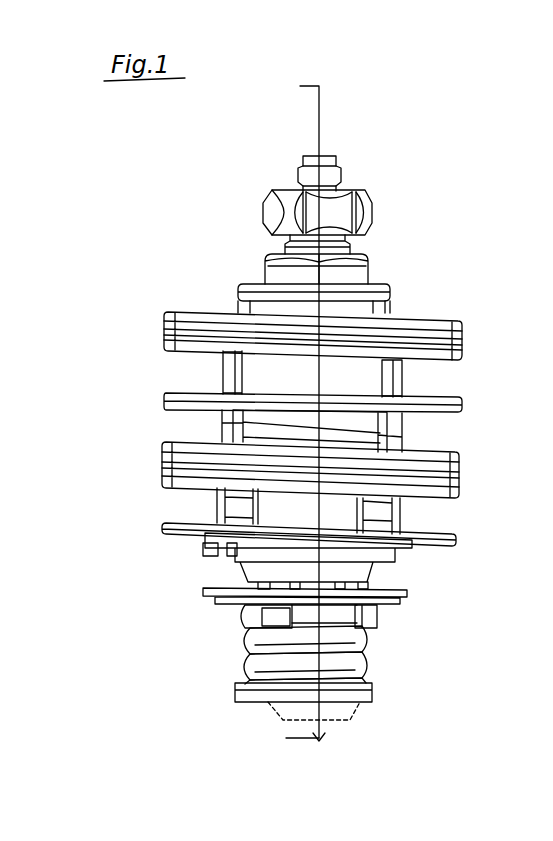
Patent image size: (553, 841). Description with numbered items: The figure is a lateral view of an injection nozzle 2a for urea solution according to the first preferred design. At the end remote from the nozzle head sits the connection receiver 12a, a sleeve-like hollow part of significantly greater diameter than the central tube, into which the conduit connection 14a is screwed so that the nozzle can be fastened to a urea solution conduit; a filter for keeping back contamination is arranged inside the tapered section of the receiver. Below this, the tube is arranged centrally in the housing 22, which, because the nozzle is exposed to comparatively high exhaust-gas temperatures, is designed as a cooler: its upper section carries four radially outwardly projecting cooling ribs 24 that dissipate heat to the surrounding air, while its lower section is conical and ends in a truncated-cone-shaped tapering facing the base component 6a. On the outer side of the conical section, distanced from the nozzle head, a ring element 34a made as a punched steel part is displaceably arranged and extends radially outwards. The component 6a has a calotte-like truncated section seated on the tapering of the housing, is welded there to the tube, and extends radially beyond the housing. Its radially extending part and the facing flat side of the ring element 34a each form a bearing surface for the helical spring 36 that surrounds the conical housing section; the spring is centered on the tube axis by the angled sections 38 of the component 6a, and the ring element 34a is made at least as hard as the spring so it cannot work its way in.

The injection nozzle 2a is at (395, 268).
The conduit connection 14a is at (350, 190).
The connection receiver 12a is at (276, 270).
The cooling ribs 24 is at (462, 342).
The housing 22 is at (232, 556).
The ring element 34a is at (405, 598).
The angled sections 38 is at (270, 620).
The helical spring 36 is at (357, 656).
The base component 6a is at (322, 716).